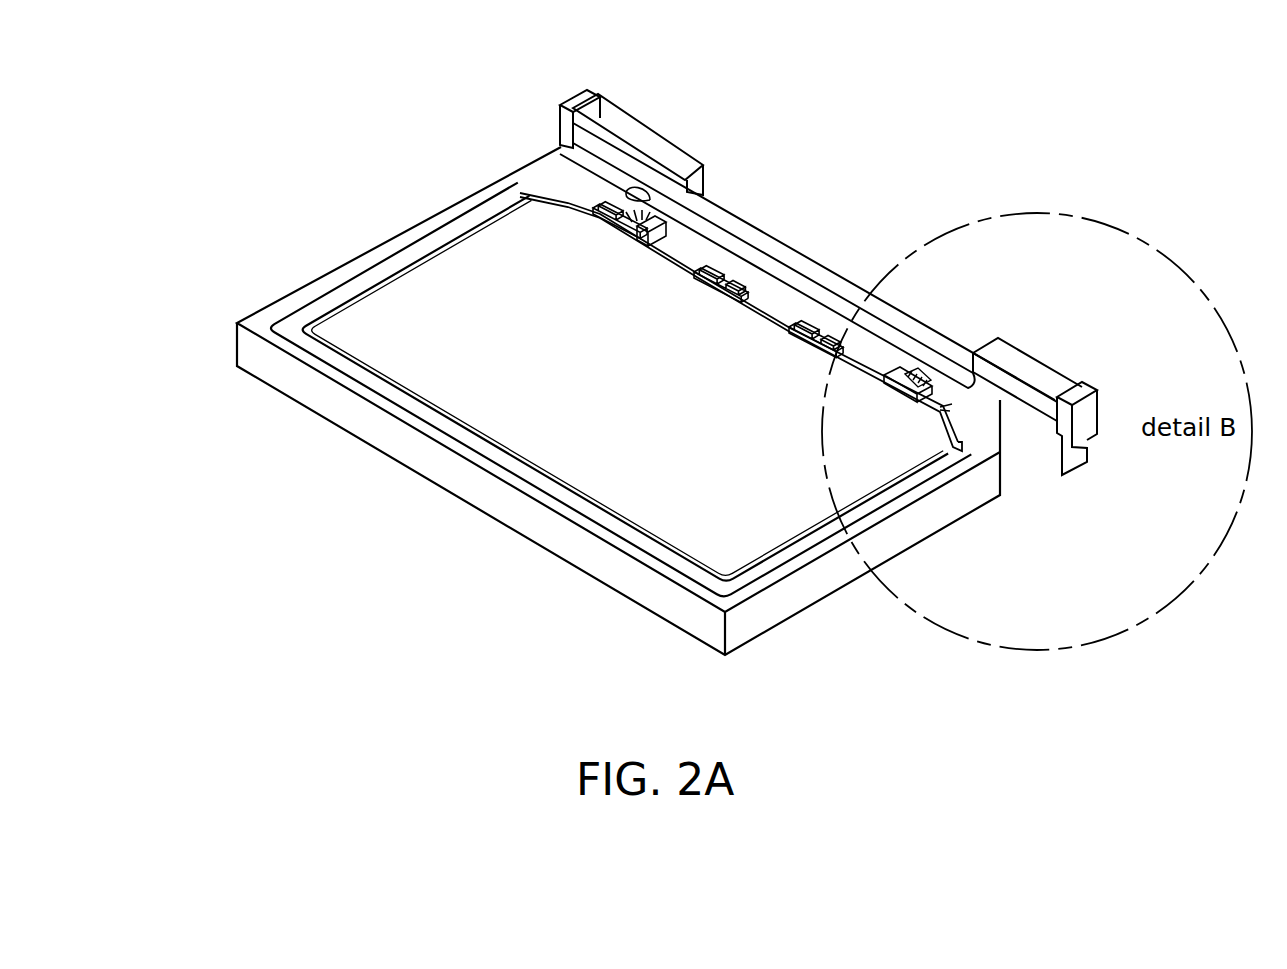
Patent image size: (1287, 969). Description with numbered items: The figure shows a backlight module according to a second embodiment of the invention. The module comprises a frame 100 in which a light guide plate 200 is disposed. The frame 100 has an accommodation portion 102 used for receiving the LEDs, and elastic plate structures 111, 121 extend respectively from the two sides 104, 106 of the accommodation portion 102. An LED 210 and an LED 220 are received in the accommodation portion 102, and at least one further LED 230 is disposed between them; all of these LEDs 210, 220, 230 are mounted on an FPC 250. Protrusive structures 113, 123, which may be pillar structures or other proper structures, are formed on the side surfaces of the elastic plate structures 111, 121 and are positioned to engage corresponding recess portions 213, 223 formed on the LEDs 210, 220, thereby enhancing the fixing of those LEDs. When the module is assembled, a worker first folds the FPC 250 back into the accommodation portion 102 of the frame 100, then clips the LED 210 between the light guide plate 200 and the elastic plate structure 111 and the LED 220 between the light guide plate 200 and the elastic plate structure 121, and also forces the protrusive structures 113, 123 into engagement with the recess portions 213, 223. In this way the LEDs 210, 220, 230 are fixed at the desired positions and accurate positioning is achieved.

The frame 100 is at (618, 130).
The accommodation portion 102 is at (778, 305).
The side of the accommodation portion 104 is at (985, 395).
The side of the accommodation portion 106 is at (592, 197).
The elastic plate structure 111 is at (880, 376).
The protrusive structure 113 is at (902, 382).
The elastic plate structure 121 is at (648, 197).
The protrusive structure 123 is at (634, 238).
The light guide plate 200 is at (383, 344).
The LED 210 is at (922, 408).
The recess portion 213 is at (976, 356).
The LED 220 is at (594, 227).
The recess portion 223 is at (652, 205).
The LED 230 is at (702, 290).
The FPC 250 is at (832, 388).